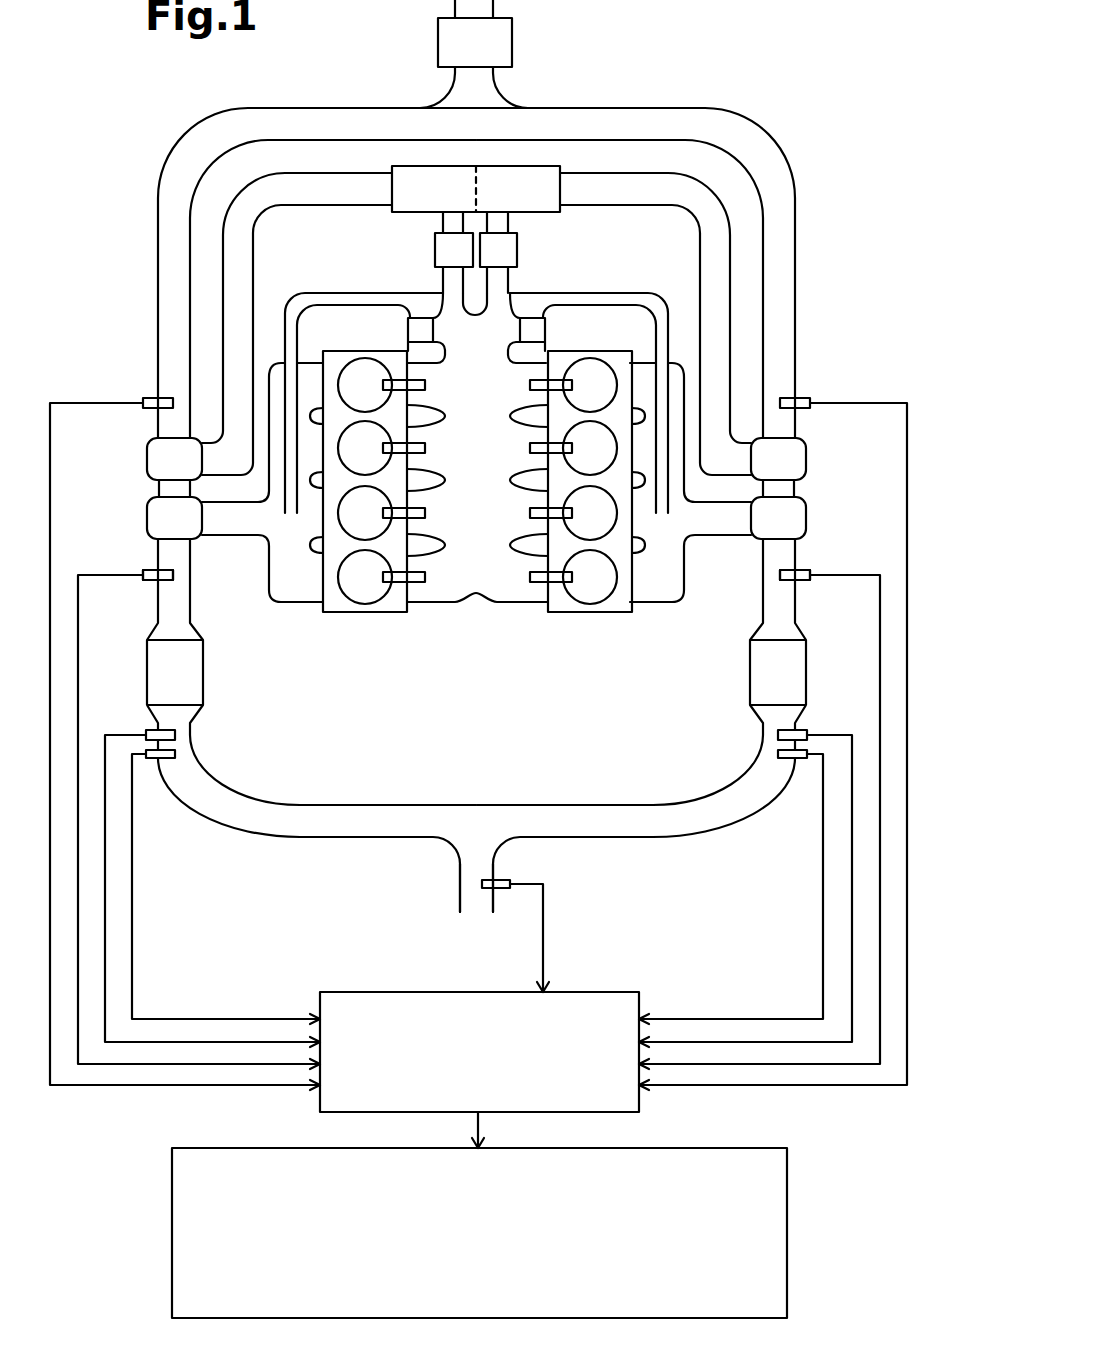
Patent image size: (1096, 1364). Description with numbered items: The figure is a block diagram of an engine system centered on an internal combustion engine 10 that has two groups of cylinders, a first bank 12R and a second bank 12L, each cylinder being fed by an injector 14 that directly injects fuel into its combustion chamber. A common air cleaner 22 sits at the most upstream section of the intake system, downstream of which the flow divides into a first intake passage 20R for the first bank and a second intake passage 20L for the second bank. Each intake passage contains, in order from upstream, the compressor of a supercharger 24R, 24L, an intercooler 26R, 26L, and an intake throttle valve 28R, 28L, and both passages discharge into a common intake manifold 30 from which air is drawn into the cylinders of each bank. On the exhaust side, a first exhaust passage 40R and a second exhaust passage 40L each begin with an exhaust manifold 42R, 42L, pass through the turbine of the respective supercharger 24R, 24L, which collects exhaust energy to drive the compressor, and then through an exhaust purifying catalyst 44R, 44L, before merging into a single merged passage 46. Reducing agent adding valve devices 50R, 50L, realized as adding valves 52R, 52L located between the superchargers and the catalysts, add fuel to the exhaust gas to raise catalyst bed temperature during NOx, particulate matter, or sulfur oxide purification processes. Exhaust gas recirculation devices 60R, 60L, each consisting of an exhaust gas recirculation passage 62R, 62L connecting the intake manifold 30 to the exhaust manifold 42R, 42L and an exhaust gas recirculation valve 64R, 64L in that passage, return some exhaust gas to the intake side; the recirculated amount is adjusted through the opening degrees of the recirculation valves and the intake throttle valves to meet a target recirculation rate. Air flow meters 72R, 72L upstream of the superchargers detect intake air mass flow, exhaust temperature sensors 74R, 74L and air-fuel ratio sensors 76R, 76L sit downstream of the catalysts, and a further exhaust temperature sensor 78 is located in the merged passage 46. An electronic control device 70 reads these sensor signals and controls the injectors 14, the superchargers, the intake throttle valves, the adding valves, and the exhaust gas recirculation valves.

The internal combustion engine 10 is at (477, 521).
The second bank 12L is at (365, 612).
The first bank 12R is at (590, 612).
The injector 14 is at (530, 578).
The second intake passage 20L is at (220, 228).
The first intake passage 20R is at (733, 228).
The air cleaner 22 is at (512, 42).
The supercharger 24L is at (147, 458).
The supercharger 24R is at (806, 458).
The intercooler 26L is at (428, 217).
The intercooler 26R is at (524, 217).
The intake throttle valve 28L is at (435, 258).
The intake throttle valve 28R is at (517, 258).
The intake manifold 30 is at (498, 603).
The second exhaust passage 40L is at (262, 803).
The first exhaust passage 40R is at (691, 803).
The exhaust manifold 42L is at (283, 603).
The exhaust manifold 42R is at (671, 603).
The exhaust purifying catalyst 44L is at (203, 683).
The exhaust purifying catalyst 44R is at (750, 683).
The merged passage 46 is at (460, 887).
The reducing agent adding valve device 50L is at (115, 559).
The reducing agent adding valve device 50R is at (842, 559).
The adding valve 52L is at (152, 570).
The adding valve 52R is at (803, 570).
The exhaust gas recirculation device 60L is at (293, 273).
The exhaust gas recirculation device 60R is at (669, 273).
The exhaust gas recirculation passage 62L is at (330, 283).
The exhaust gas recirculation passage 62R is at (645, 297).
The exhaust gas recirculation valve 64L is at (408, 331).
The exhaust gas recirculation valve 64R is at (545, 331).
The electronic control device 70 is at (372, 992).
The air flow meter 72L is at (155, 398).
The air flow meter 72R is at (798, 398).
The exhaust temperature sensor 74L is at (150, 730).
The exhaust temperature sensor 74R is at (835, 712).
The air-fuel ratio sensor 76L is at (162, 762).
The air-fuel ratio sensor 76R is at (792, 762).
The exhaust temperature sensor 78 is at (505, 880).